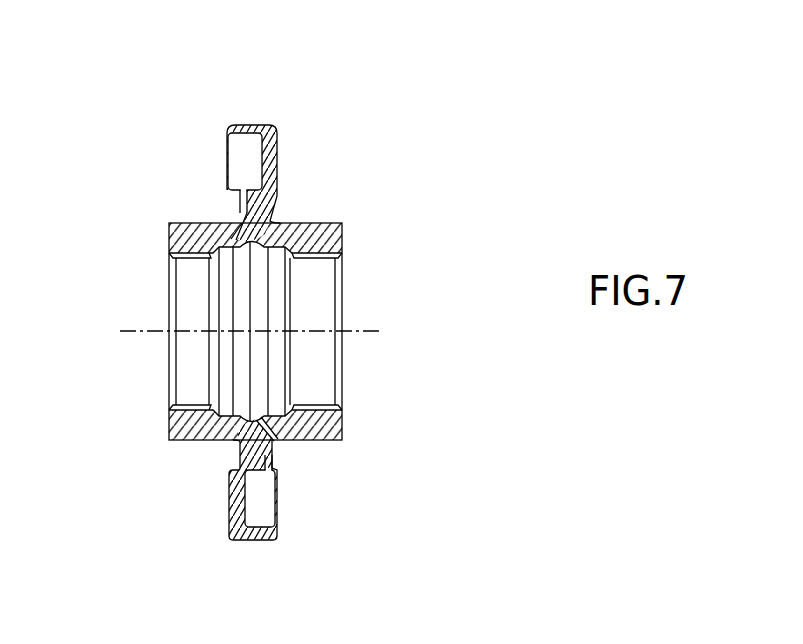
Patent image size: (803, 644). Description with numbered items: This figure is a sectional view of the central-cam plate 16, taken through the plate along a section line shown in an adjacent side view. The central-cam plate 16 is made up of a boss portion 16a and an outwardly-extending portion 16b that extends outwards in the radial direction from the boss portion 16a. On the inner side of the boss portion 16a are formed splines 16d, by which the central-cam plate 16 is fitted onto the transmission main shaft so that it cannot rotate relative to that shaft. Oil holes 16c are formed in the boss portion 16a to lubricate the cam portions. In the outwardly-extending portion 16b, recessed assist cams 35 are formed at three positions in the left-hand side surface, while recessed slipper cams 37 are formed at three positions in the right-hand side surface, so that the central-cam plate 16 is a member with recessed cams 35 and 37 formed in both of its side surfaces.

The central-cam plate 16 is at (198, 93).
The boss portion 16a is at (197, 233).
The outwardly-extending portion 16b is at (275, 157).
The oil holes 16c is at (236, 222).
The splines 16d is at (195, 258).
The assist cams 35 is at (245, 158).
The slipper cams 37 is at (262, 500).